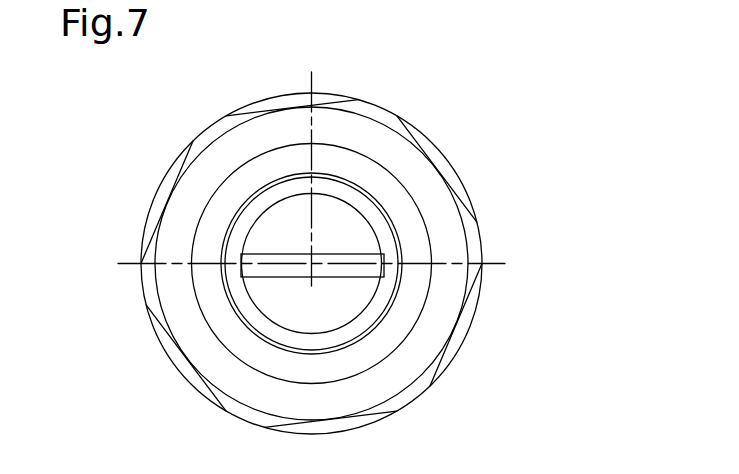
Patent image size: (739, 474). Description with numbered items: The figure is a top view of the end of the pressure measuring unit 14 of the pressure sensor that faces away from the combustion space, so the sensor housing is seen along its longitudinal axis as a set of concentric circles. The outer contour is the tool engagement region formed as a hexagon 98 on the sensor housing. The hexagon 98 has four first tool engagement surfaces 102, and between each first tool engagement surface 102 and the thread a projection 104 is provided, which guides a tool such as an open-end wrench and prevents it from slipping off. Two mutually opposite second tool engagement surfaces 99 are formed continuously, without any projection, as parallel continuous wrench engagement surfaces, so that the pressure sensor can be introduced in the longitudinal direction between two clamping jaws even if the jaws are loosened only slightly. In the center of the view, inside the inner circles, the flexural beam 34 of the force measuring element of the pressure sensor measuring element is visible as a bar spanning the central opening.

The pressure measuring unit 14 is at (522, 205).
The flexural beam 34 is at (350, 268).
The hexagon 98 is at (434, 150).
The second tool engagement surfaces 99 is at (158, 206).
The first tool engagement surfaces 102 is at (318, 107).
The projection 104 is at (287, 103).